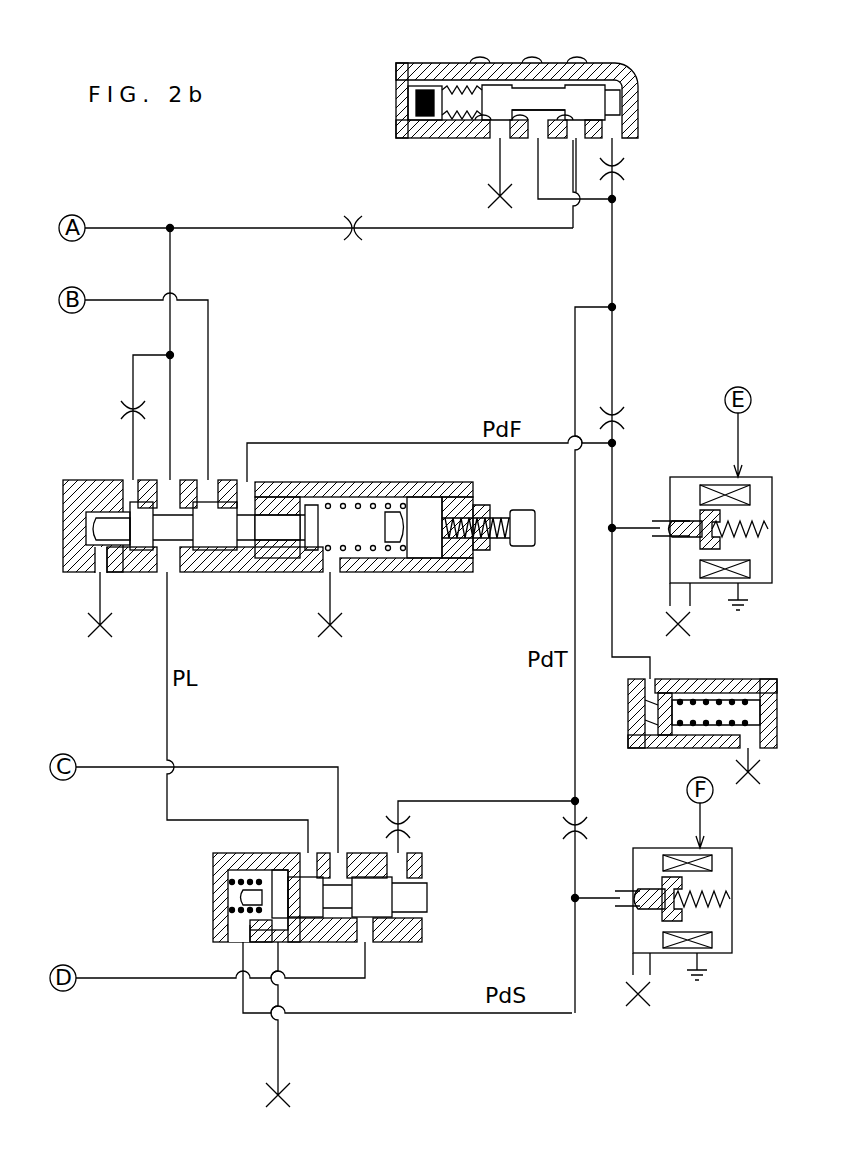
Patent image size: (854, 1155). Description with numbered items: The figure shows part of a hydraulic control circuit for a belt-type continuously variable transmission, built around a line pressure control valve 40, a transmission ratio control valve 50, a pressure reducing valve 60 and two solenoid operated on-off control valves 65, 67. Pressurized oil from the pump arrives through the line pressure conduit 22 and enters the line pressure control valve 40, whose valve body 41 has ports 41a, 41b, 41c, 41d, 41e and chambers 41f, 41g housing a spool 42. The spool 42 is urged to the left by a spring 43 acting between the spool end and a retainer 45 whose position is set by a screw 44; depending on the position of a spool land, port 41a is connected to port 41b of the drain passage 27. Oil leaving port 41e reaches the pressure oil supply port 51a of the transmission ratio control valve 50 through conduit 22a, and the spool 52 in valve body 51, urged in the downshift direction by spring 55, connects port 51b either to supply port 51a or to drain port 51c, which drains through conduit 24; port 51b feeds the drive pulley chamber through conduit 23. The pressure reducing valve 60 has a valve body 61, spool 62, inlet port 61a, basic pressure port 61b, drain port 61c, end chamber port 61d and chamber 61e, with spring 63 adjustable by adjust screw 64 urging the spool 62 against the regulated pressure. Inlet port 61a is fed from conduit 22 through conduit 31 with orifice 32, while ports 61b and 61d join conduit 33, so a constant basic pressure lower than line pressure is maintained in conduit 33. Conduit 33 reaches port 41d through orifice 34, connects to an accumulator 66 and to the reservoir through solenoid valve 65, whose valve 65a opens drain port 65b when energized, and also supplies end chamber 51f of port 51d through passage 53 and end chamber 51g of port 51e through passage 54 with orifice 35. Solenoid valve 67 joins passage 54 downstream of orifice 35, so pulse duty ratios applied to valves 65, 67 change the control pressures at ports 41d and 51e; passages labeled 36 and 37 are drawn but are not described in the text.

The line pressure conduit 22 is at (137, 216).
The conduit 22a is at (169, 748).
The conduit 23 is at (140, 754).
The conduit 24 is at (138, 980).
The drain passage 27 is at (150, 286).
The conduit 31 is at (420, 232).
The orifice 32 is at (350, 240).
The conduit 33 is at (614, 249).
The orifice 34 is at (620, 420).
The orifice 35 is at (558, 830).
The orifice 36 is at (130, 388).
The oil passage PdF 37 is at (418, 421).
The line pressure control valve 40 is at (292, 518).
The valve body 41 is at (276, 518).
The port 41a is at (190, 473).
The port 41b is at (210, 478).
The port 41c is at (130, 470).
The port 41d is at (250, 480).
The port 41e is at (157, 590).
The chamber 41f is at (182, 575).
The chamber 41g is at (273, 558).
The spool 42 is at (212, 543).
The spring 43 is at (369, 549).
The screw 44 is at (530, 546).
The retainer 45 is at (440, 555).
The transmission ratio control valve 50 is at (333, 884).
The valve body 51 is at (333, 876).
The pressure oil supply port 51a is at (307, 853).
The port 51b is at (345, 849).
The drain port 51c is at (363, 942).
The port 51d is at (416, 856).
The port 51e is at (235, 943).
The end chamber 51f is at (438, 924).
The end chamber 51g is at (230, 900).
The spool 52 is at (363, 930).
The passage 53 is at (445, 798).
The passage 54 is at (438, 1018).
The spring 55 is at (230, 877).
The pressure reducing valve 60 is at (563, 150).
The valve body 61 is at (565, 73).
The inlet port 61a is at (578, 198).
The basic pressure port 61b is at (530, 201).
The drain port 61c is at (488, 150).
The end chamber port 61d is at (625, 142).
The chamber 61e is at (628, 69).
The spool 62 is at (592, 87).
The spring 63 is at (460, 87).
The adjust screw 64 is at (413, 83).
The solenoid operated on-off control valve 65 is at (696, 524).
The valve 65a is at (675, 539).
The drain port 65b is at (620, 526).
The accumulator 66 is at (753, 680).
The solenoid operated on-off control valve 67 is at (735, 950).